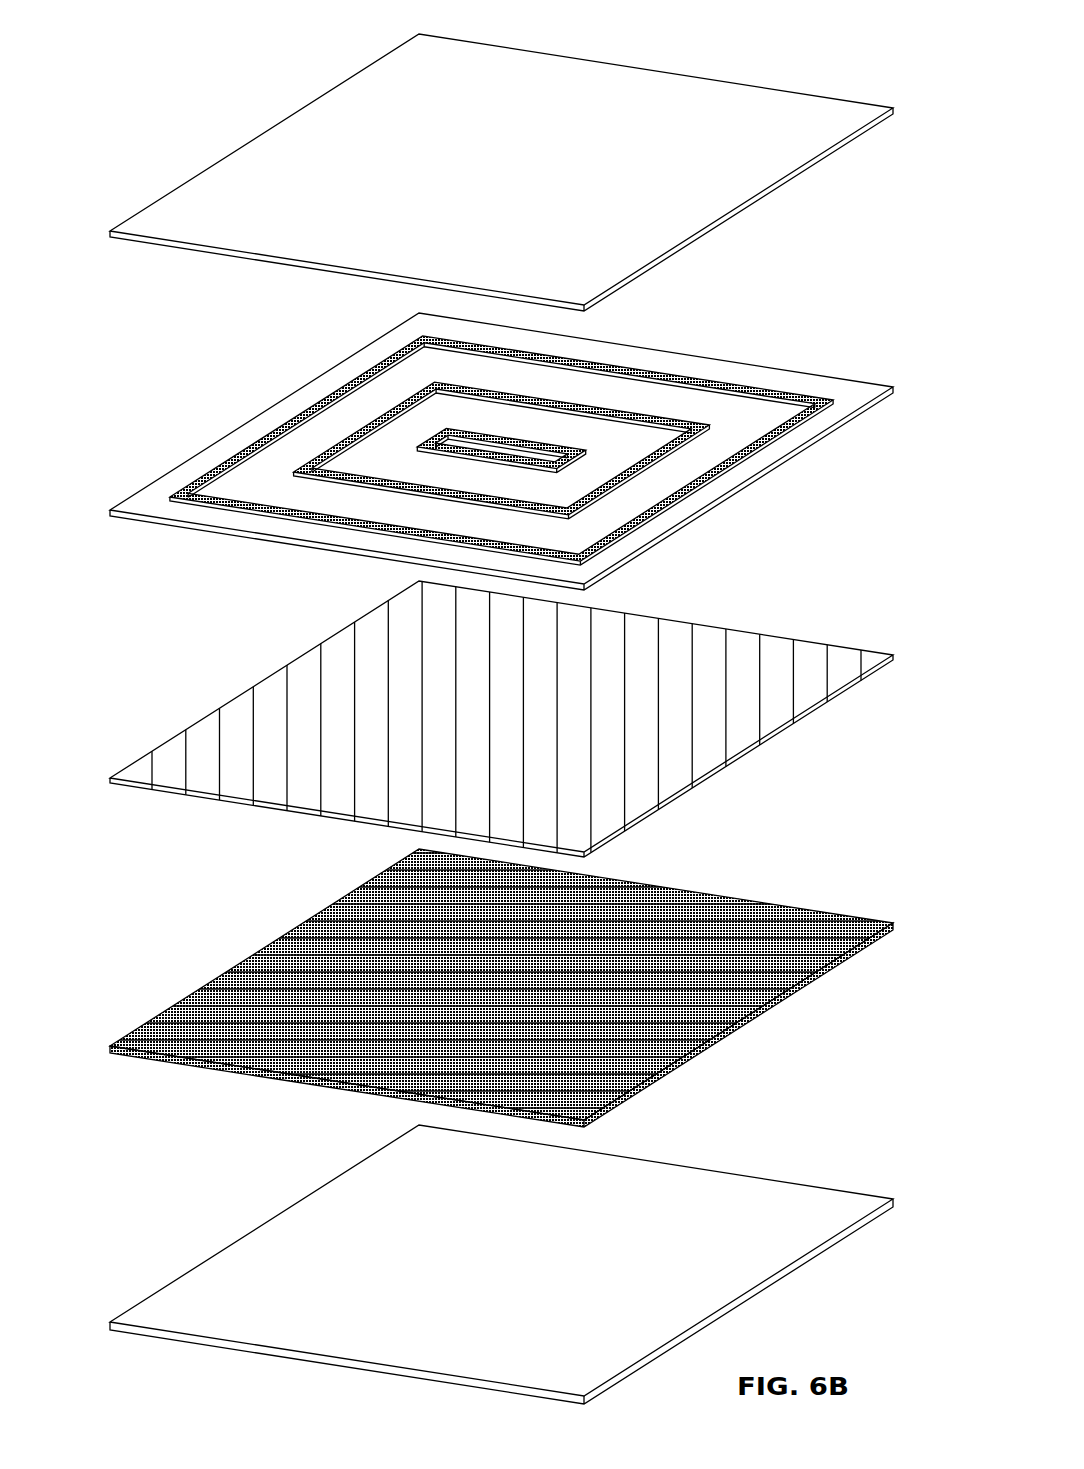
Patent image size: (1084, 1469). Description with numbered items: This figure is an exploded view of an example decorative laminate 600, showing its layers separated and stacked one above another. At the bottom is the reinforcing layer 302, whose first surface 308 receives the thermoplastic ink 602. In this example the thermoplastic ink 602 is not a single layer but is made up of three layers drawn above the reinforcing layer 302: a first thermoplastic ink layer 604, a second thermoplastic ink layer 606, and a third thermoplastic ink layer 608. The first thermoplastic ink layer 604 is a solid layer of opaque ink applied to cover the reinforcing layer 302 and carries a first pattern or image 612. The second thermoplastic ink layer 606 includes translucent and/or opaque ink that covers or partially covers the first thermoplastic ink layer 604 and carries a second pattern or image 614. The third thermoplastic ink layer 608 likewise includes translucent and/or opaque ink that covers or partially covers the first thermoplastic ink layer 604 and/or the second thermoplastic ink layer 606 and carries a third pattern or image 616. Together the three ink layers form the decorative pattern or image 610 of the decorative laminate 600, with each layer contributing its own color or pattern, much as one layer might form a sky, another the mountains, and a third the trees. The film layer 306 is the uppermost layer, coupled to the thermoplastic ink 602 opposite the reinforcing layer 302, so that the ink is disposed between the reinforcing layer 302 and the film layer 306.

The decorative laminate 600 is at (233, 116).
The reinforcing layer 302 is at (233, 1351).
The film layer 306 is at (109, 232).
The first surface 308 is at (233, 1273).
The thermoplastic ink 602 is at (897, 372).
The first thermoplastic ink layer 604 is at (110, 1047).
The second thermoplastic ink layer 606 is at (109, 779).
The third thermoplastic ink layer 608 is at (109, 511).
The decorative pattern or image 610 is at (853, 186).
The first pattern or image 612 is at (270, 881).
The second pattern or image 614 is at (253, 622).
The third pattern or image 616 is at (248, 366).